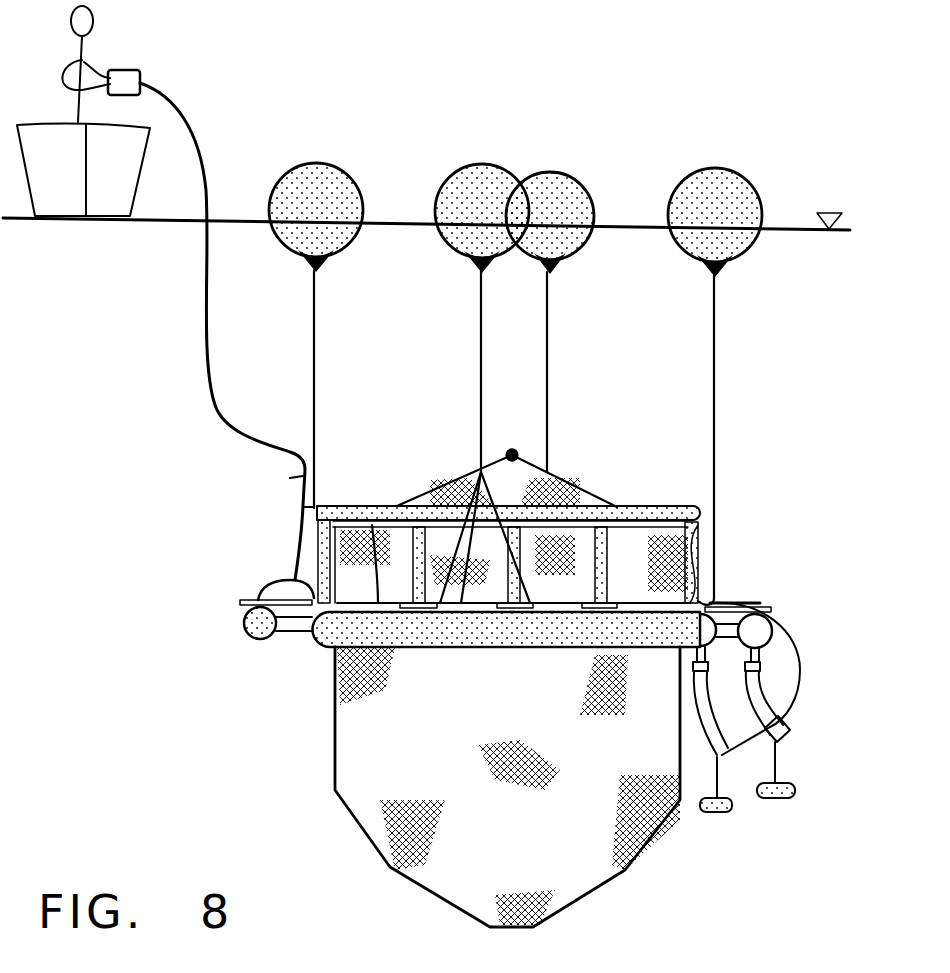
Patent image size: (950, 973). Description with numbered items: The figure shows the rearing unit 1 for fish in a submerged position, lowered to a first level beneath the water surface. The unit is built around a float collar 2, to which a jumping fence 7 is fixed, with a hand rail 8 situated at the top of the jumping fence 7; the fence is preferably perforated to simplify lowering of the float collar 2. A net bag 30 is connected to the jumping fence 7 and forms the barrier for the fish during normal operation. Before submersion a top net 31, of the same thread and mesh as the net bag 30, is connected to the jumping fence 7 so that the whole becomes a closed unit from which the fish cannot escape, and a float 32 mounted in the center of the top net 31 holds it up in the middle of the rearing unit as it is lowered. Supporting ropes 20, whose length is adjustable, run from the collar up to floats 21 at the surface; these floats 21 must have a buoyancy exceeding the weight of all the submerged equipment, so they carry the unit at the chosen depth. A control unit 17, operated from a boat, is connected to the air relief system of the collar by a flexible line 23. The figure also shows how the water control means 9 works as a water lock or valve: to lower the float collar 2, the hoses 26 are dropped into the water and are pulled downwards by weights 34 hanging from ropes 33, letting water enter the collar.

The rearing unit 1 is at (318, 695).
The float collar 2 is at (268, 650).
The jumping fence 7 is at (320, 543).
The hand rail 8 is at (673, 507).
The water control means 9 is at (767, 655).
The control unit 17 is at (130, 70).
The supporting rope 20 is at (716, 326).
The float 21 is at (712, 168).
The cable 23 is at (193, 125).
The hose 26 is at (773, 698).
The net bag 30 is at (653, 840).
The top net 31 is at (583, 480).
The float 32 is at (523, 452).
The rope 33 is at (795, 661).
The weight 34 is at (797, 787).